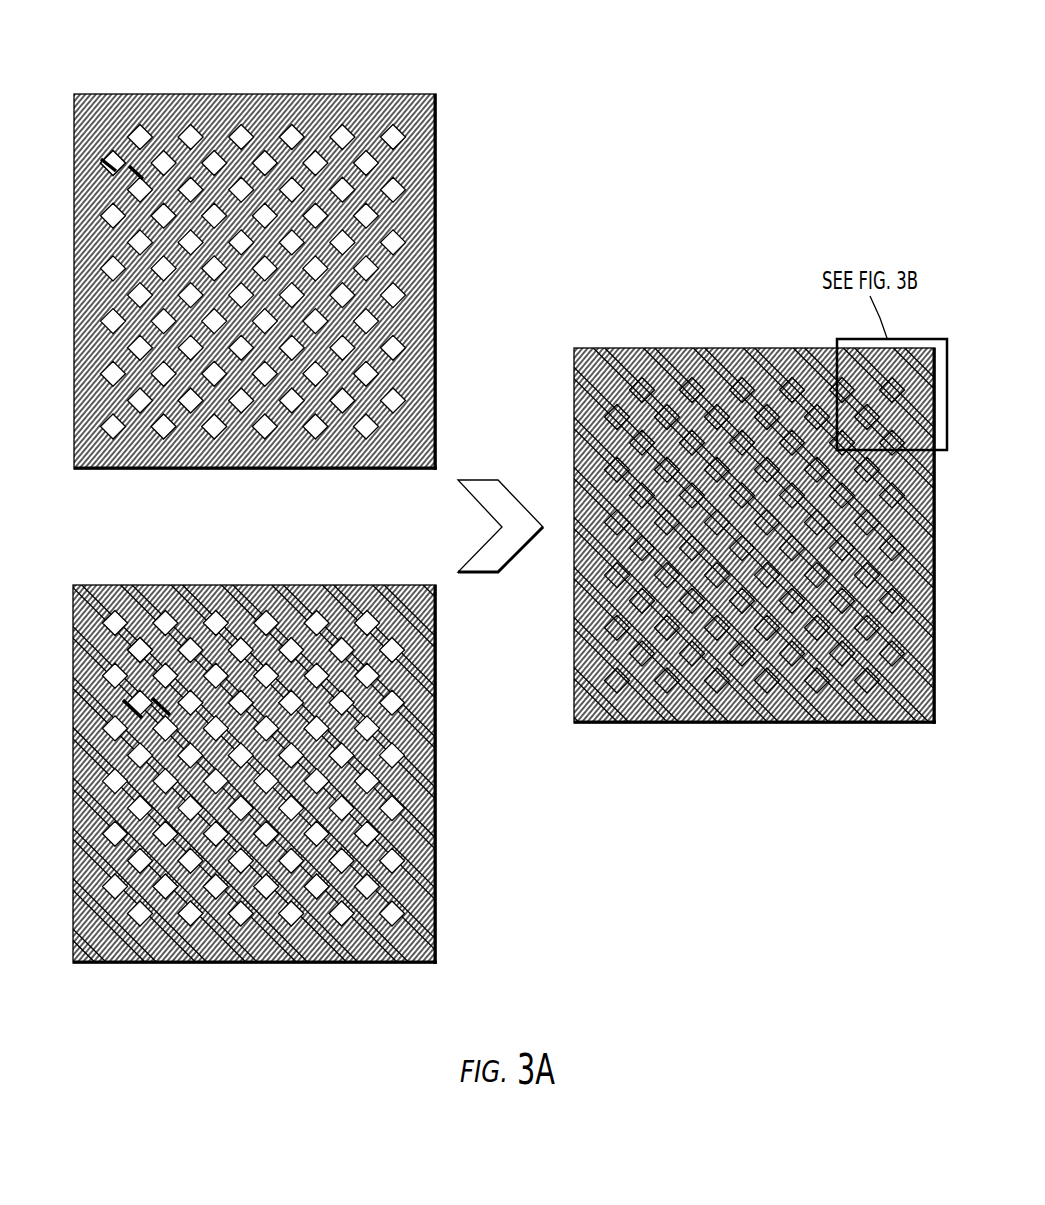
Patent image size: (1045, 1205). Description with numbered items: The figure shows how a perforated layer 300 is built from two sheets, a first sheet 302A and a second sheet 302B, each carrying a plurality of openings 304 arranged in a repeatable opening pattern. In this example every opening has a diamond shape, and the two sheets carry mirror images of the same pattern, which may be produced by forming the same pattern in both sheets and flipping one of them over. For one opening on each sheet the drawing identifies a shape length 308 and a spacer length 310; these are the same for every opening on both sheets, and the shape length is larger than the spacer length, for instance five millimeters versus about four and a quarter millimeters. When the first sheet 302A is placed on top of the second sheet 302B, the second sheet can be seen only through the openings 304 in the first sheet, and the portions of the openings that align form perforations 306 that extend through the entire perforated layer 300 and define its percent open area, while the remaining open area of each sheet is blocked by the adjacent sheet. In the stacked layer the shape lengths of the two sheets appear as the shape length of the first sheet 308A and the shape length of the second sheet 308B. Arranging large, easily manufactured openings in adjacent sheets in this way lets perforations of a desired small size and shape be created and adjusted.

The perforated layer 300 is at (730, 280).
The first sheet 302A is at (289, 69).
The second sheet 302B is at (291, 555).
The openings 304 is at (397, 186).
The perforations 306 is at (617, 482).
The shape length 308 is at (103, 165).
The shape length of the first sheet 308A is at (690, 362).
The shape length of the second sheet 308B is at (615, 412).
The spacer length 310 is at (136, 170).